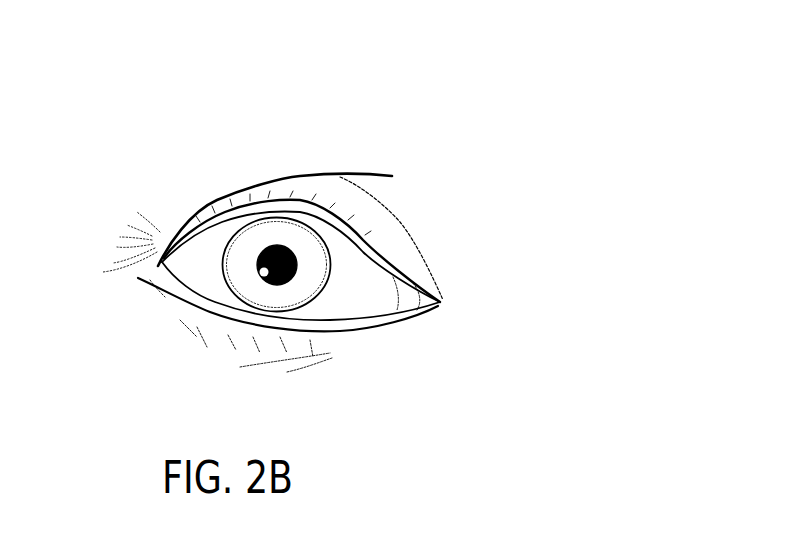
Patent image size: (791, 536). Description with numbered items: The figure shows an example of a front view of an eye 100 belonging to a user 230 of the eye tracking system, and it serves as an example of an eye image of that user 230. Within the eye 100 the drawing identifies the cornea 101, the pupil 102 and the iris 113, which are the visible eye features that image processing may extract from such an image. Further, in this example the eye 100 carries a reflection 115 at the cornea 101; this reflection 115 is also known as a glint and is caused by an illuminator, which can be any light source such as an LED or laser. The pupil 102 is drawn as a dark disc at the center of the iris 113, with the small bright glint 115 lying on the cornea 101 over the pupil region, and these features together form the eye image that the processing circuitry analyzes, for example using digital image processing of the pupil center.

The eye 100 is at (172, 155).
The cornea 101 is at (360, 287).
The pupil 102 is at (292, 252).
The iris 113 is at (325, 240).
The reflection 115 is at (266, 274).
The user 230 is at (545, 92).